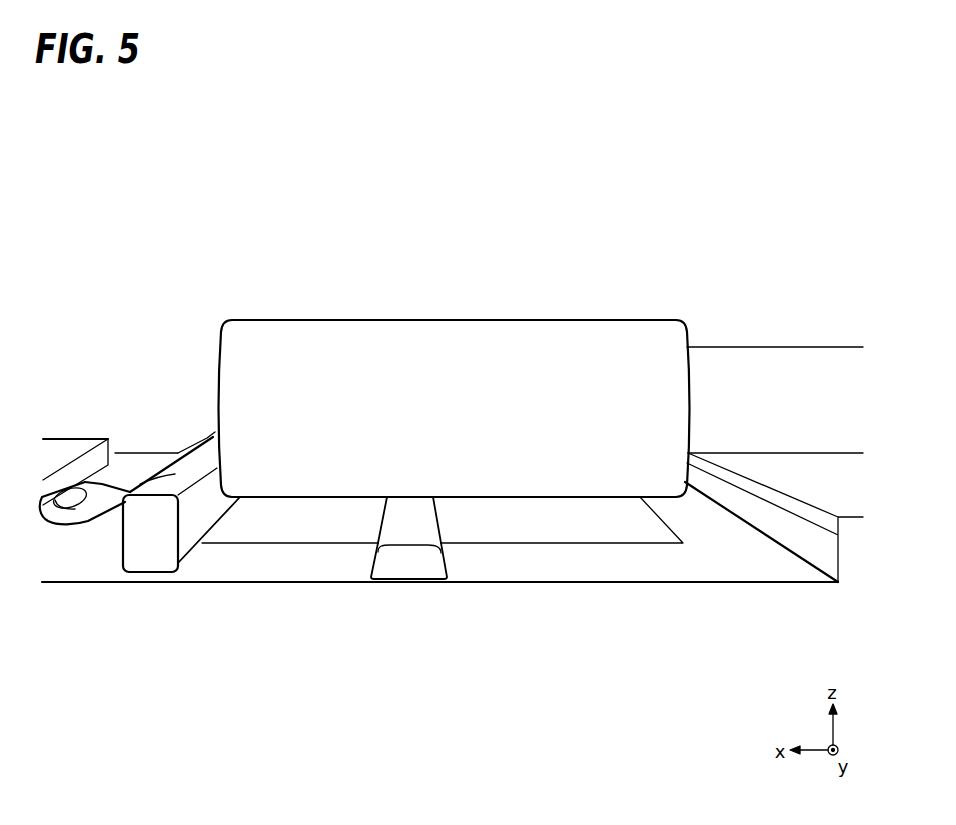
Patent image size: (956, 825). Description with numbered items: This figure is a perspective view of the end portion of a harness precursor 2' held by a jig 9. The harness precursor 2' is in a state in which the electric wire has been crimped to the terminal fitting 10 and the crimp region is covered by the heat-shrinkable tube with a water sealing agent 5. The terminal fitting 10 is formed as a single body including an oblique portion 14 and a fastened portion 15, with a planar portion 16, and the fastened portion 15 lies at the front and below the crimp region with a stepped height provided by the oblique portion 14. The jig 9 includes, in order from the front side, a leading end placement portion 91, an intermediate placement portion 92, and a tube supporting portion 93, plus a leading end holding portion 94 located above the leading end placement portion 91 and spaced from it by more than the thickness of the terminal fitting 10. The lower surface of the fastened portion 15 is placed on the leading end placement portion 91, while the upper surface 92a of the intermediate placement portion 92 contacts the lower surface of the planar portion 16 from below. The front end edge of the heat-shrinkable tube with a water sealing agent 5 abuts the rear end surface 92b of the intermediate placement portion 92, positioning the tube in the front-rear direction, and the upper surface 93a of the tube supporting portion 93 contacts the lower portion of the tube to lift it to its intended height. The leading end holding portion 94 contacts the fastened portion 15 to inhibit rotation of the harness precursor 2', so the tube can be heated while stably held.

The harness precursor 2' is at (365, 423).
The heat-shrinkable tube with a water sealing agent 5 is at (380, 335).
The jig 9 is at (664, 617).
The terminal fitting 10 is at (188, 418).
The oblique portion 14 is at (119, 492).
The fastened portion 15 is at (60, 512).
The planar portion 16 is at (210, 432).
The leading end placement portion 91 is at (90, 552).
The intermediate placement portion 92 is at (198, 510).
The upper surface 92a is at (140, 497).
The rear end surface 92b is at (183, 528).
The tube supporting portion 93 is at (412, 562).
The upper surface 93a is at (407, 523).
The leading end holding portion 94 is at (55, 447).